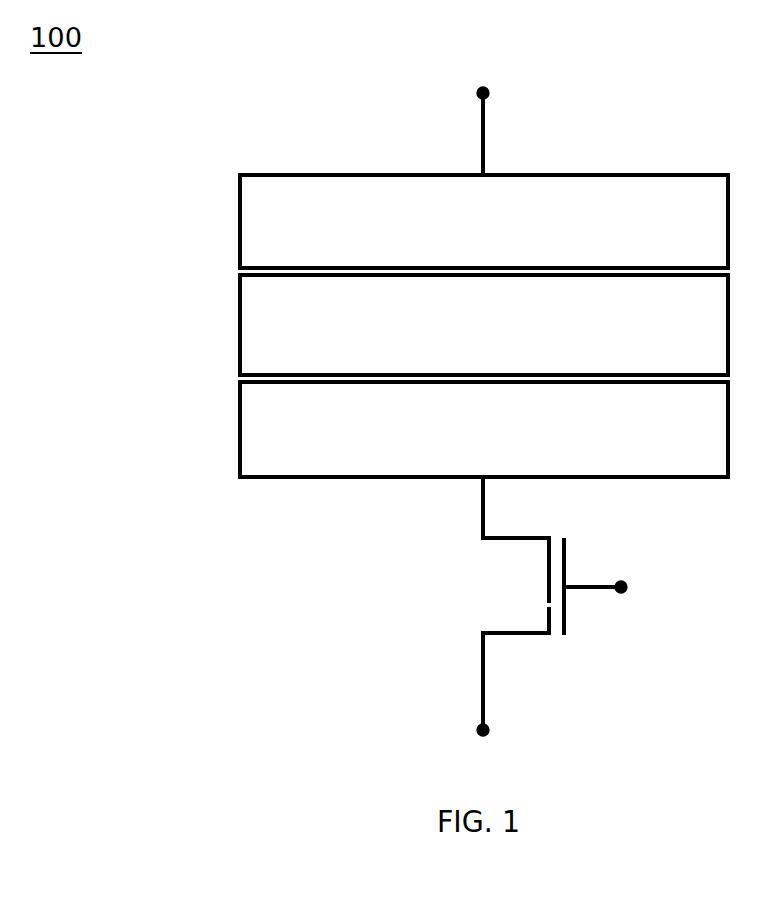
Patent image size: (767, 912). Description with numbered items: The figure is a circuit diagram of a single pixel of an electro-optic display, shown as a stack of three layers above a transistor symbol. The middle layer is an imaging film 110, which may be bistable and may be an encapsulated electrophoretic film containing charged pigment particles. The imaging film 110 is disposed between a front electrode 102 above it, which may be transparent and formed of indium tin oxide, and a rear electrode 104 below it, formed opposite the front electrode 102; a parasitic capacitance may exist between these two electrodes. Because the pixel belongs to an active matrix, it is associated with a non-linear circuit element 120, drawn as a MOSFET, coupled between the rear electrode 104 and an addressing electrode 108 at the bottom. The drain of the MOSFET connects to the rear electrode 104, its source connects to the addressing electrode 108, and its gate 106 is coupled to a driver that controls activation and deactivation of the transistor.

The front electrode 102 is at (270, 168).
The imaging film 110 is at (233, 290).
The rear electrode 104 is at (233, 427).
The gate 106 is at (614, 572).
The addressing electrode 108 is at (468, 712).
The non-linear circuit element 120 is at (565, 653).